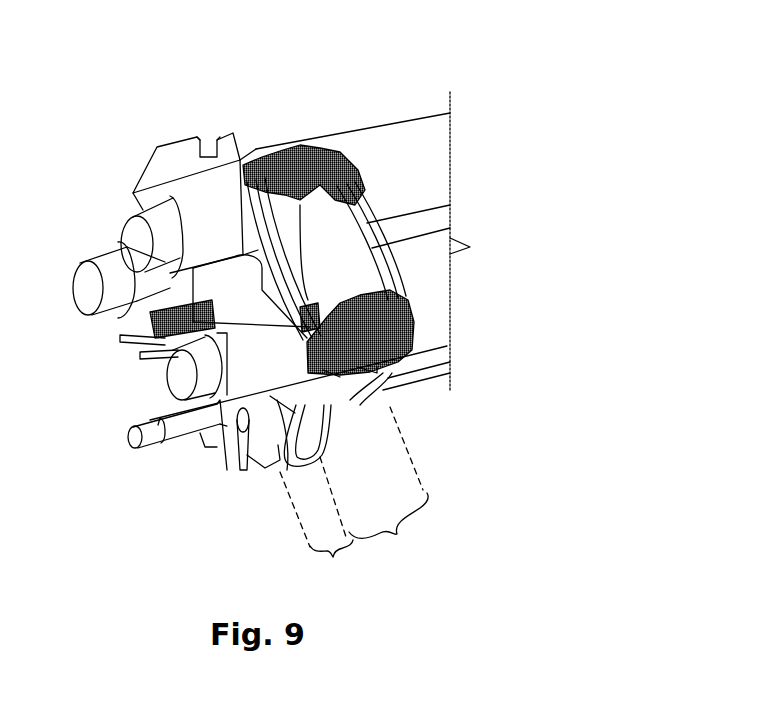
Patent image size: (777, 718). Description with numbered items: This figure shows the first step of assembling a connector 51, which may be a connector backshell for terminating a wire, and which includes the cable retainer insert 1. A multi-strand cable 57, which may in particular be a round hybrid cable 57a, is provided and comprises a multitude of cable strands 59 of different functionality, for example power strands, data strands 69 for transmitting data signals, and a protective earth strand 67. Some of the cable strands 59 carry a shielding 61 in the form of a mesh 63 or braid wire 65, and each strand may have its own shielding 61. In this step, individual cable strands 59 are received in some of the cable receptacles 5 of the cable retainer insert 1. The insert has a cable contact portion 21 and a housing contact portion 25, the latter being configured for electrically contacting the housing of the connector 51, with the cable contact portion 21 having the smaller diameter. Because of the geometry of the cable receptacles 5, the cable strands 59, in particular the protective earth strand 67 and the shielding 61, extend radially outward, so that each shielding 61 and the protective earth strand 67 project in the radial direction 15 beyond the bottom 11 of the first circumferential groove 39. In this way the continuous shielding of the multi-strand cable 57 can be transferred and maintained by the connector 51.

The cable retainer insert 1 is at (120, 62).
The cable receptacles 5 is at (246, 160).
The bottom of the first circumferential groove 11 is at (334, 224).
The radial direction 15 is at (257, 247).
The cable contact portion 21 is at (375, 469).
The housing contact portion 25 is at (316, 525).
The first circumferential groove 39 is at (337, 218).
The connector 51 is at (204, 122).
The multi-strand cable 57 is at (311, 217).
The round hybrid cable 57a is at (405, 120).
The cable strands 59 is at (174, 213).
The shielding 61 is at (376, 209).
The mesh 63 is at (376, 209).
The braid wire 65 is at (299, 166).
The protective earth strand 67 is at (181, 448).
The data strands 69 is at (148, 378).